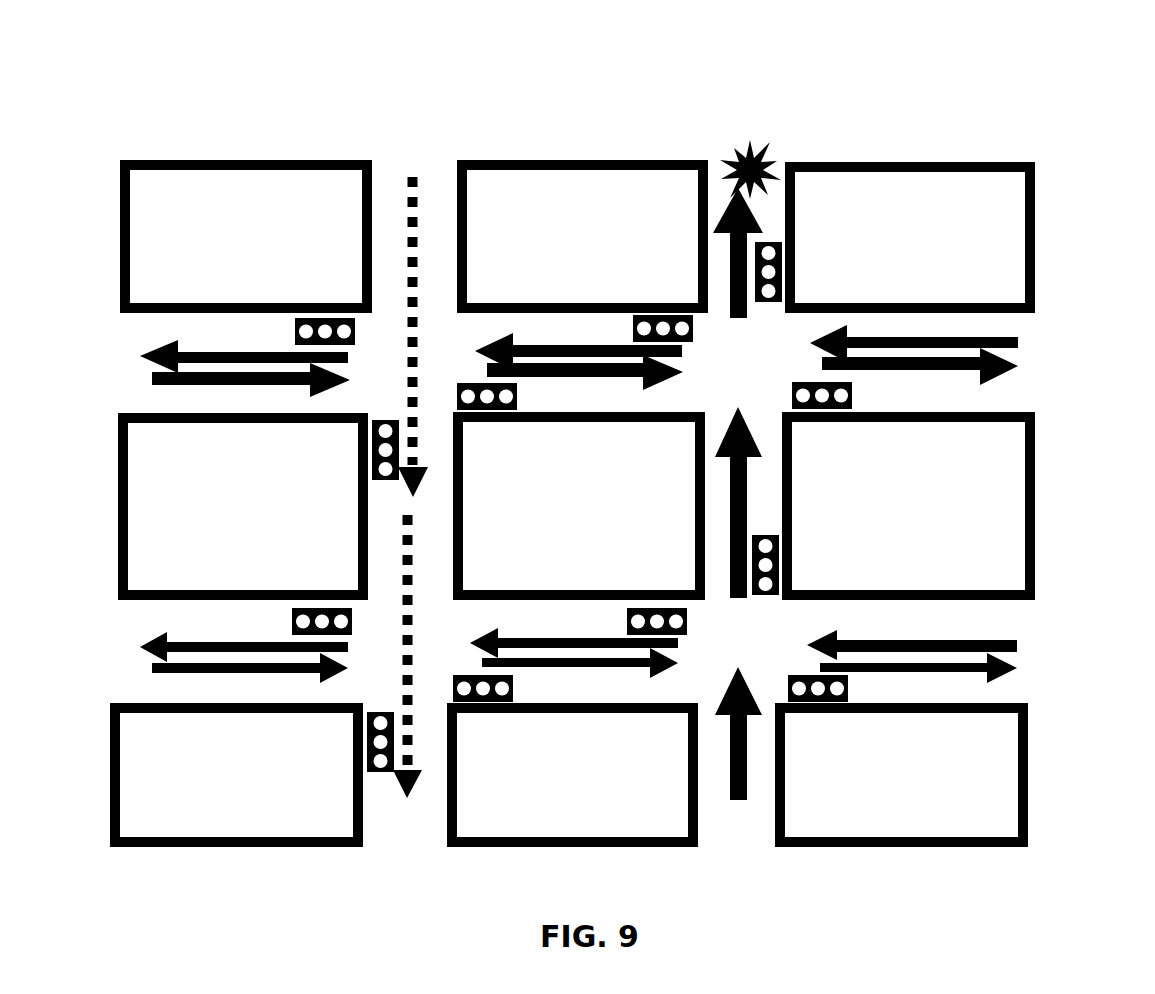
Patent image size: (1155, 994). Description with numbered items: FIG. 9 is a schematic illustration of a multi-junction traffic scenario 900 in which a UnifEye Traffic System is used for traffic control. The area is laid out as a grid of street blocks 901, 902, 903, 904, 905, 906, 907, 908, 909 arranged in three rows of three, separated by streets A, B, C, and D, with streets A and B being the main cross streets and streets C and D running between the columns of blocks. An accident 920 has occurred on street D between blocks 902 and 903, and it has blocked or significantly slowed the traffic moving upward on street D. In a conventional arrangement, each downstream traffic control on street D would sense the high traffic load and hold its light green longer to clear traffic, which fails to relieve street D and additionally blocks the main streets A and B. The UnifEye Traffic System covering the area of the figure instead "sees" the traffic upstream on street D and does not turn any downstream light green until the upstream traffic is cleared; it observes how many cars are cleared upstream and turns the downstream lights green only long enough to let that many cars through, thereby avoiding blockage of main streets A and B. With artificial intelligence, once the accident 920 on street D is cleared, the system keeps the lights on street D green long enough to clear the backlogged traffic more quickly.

The traffic intersection environment 900 is at (1050, 105).
The street block 901 is at (246, 236).
The street block 902 is at (582, 236).
The street block 903 is at (910, 237).
The street block 904 is at (243, 506).
The street block 905 is at (579, 506).
The street block 906 is at (908, 506).
The street block 907 is at (236, 775).
The street block 908 is at (572, 775).
The street block 909 is at (901, 775).
The accident 920 is at (754, 158).